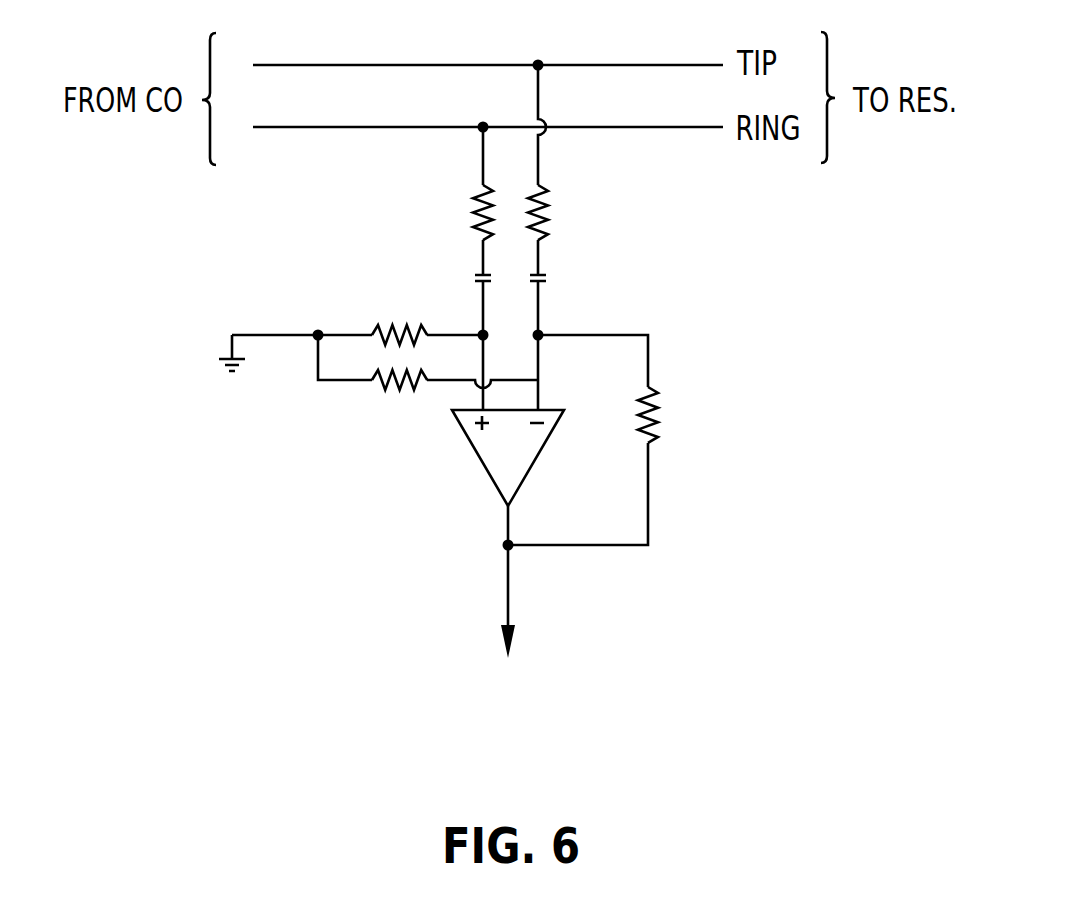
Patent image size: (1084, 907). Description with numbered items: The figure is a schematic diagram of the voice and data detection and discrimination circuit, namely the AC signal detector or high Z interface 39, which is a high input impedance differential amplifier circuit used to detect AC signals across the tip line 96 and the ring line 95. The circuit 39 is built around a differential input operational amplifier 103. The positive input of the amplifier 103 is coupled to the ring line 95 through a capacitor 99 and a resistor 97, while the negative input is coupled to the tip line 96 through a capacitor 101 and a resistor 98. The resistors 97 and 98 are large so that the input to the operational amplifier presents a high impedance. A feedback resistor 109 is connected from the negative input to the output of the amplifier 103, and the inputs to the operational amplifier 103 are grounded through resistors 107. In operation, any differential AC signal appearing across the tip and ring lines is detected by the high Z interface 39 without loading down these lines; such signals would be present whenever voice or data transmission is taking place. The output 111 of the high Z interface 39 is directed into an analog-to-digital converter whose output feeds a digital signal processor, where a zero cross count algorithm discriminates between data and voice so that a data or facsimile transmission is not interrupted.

The tip line 96 is at (590, 65).
The ring line 95 is at (684, 128).
The resistor 97 is at (472, 191).
The resistor 98 is at (547, 190).
The capacitor 99 is at (475, 281).
The capacitor 101 is at (546, 273).
The resistors 107 is at (392, 388).
The differential input operational amplifier 103 is at (492, 485).
The feedback resistor 109 is at (652, 397).
The output 111 is at (509, 591).
The high Z interface 39 is at (806, 324).